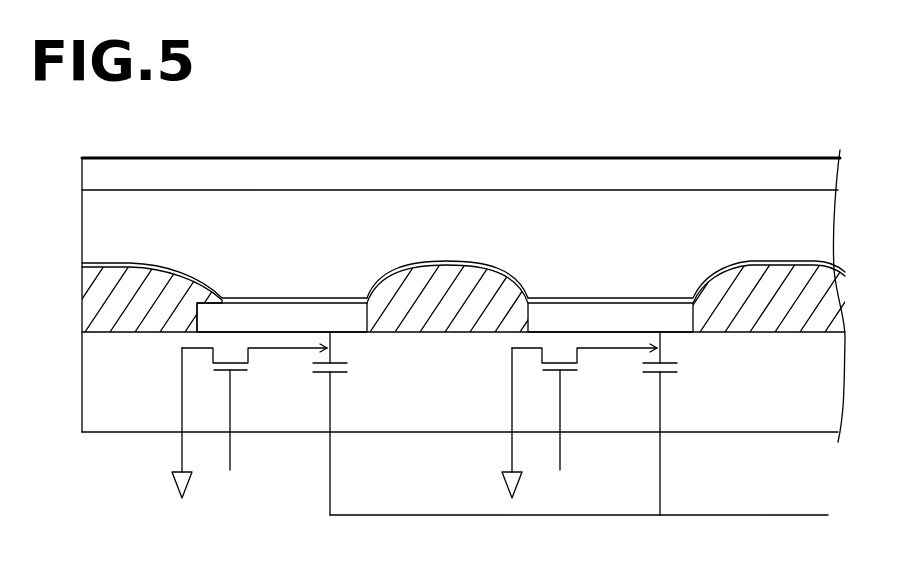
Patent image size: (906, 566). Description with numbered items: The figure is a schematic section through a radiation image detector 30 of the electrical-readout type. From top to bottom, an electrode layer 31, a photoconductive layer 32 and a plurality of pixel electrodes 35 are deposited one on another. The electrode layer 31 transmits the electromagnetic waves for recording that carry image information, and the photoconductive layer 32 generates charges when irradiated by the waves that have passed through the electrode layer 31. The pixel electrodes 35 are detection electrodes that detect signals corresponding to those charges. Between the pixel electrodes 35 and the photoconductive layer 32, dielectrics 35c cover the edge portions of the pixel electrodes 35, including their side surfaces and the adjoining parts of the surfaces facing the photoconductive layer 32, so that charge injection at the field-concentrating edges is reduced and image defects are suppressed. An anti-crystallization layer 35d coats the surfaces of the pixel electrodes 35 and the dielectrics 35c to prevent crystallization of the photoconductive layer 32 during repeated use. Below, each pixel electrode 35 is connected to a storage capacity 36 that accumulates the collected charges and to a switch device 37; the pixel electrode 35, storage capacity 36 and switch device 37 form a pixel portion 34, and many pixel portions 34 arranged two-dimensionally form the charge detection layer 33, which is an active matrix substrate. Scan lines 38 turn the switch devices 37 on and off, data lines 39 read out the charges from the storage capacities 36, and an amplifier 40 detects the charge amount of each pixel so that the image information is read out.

The radiation image detector 30 is at (812, 125).
The electrode layer 31 is at (92, 173).
The photoconductive layer 32 is at (92, 240).
The charge detection layer 33 is at (92, 383).
The pixel portion 34 is at (298, 282).
The pixel electrode 35 is at (282, 315).
The dielectric 35c is at (153, 287).
The anti-crystallization layer 35d is at (484, 290).
The storage capacity 36 is at (346, 383).
The switch device 37 is at (249, 383).
The scan line 38 is at (232, 453).
The data line 39 is at (180, 452).
The amplifier 40 is at (172, 485).